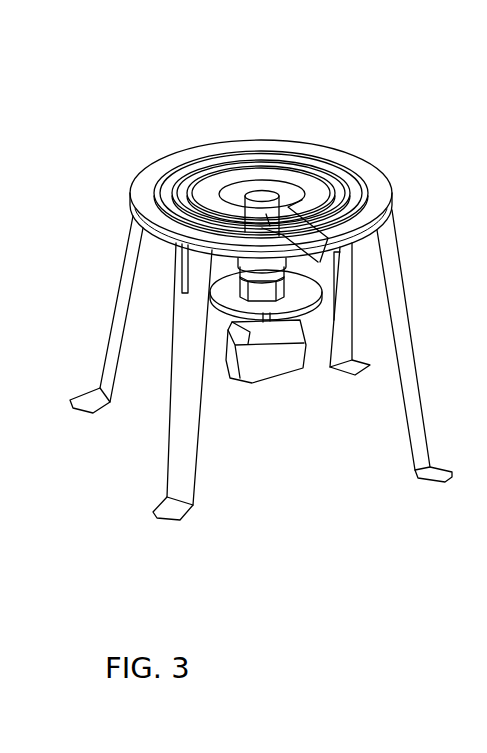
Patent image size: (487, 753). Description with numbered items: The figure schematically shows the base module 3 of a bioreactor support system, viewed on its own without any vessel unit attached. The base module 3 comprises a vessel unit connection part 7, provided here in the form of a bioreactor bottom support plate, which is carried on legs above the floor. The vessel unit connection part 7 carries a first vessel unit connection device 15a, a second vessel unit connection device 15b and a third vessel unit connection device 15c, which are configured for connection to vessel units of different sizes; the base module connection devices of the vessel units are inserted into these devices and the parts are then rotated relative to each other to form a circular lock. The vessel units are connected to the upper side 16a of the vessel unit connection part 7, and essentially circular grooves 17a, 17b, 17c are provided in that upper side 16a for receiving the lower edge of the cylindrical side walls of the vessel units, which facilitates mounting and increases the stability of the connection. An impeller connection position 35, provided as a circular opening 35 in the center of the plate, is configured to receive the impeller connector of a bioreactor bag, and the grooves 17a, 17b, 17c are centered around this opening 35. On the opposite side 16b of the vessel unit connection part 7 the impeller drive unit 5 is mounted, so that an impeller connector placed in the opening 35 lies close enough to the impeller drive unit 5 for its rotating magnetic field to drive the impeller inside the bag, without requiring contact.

The base module 3 is at (95, 127).
The impeller drive unit 5 is at (313, 347).
The vessel unit connection part 7 is at (370, 168).
The first vessel unit connection device 15a is at (222, 177).
The second vessel unit connection device 15b is at (262, 160).
The third vessel unit connection device 15c is at (308, 153).
The upper side 16a is at (342, 158).
The opposite side 16b is at (352, 257).
The groove 17a is at (261, 193).
The groove 17b is at (261, 193).
The groove 17c is at (261, 193).
The impeller connection position 35 is at (232, 187).